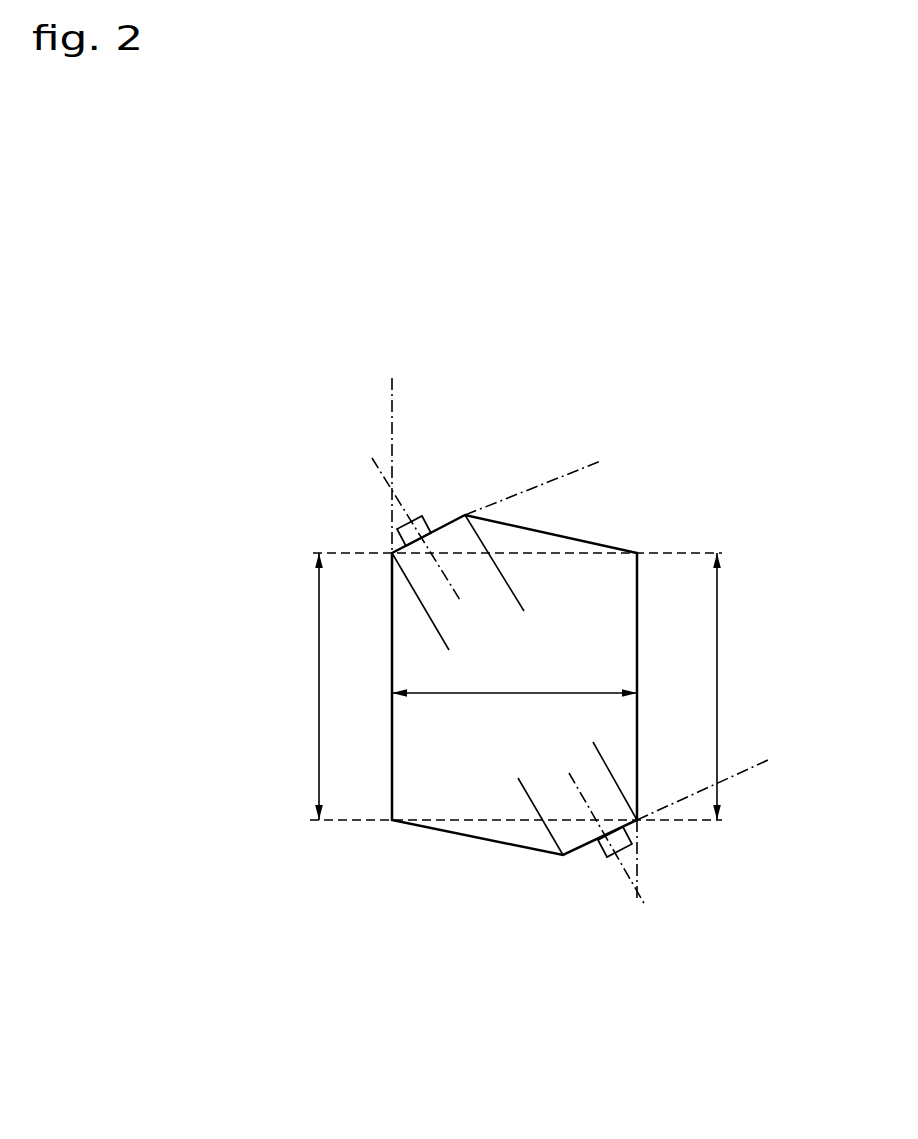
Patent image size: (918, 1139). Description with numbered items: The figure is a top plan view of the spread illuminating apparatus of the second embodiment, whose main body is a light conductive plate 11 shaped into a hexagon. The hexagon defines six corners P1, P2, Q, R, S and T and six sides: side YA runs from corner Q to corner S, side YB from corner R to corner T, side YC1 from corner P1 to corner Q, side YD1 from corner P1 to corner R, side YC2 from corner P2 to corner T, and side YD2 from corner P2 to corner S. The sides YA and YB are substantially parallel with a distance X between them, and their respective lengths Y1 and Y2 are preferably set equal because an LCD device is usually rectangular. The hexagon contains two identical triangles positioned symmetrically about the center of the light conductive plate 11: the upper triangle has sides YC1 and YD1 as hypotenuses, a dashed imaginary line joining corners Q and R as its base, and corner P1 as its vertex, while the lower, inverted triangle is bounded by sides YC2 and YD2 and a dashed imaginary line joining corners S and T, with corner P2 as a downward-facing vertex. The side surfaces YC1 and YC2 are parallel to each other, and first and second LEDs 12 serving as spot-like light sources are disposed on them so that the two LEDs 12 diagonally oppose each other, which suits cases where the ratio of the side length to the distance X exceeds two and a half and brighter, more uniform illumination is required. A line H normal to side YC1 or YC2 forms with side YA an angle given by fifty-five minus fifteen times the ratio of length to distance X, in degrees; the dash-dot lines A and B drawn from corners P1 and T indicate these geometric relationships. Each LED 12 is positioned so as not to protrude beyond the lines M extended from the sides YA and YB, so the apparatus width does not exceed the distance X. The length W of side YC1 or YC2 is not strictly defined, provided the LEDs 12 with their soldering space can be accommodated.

The light conductive plate 11 is at (598, 582).
The LED 12 is at (389, 515).
The line extended from the sides YA and YB M is at (397, 380).
The length of the side YC1/YC2 W is at (446, 638).
The line normal to the side YC H is at (446, 578).
The reference line A is at (544, 474).
The reference line B is at (717, 782).
The distance between the sides YA and YB X is at (514, 714).
The length of the side YA Y1 is at (296, 686).
The length of the side YB Y2 is at (738, 686).
The side YA is at (390, 710).
The side YB is at (640, 650).
The side YC1 is at (442, 528).
The side YC2 is at (594, 847).
The side YD1 is at (600, 540).
The side YD2 is at (417, 826).
The angle P1 is at (468, 513).
The angle P2 is at (561, 857).
The angle Q is at (389, 551).
The angle R is at (641, 550).
The angle S is at (388, 823).
The angle T is at (641, 823).